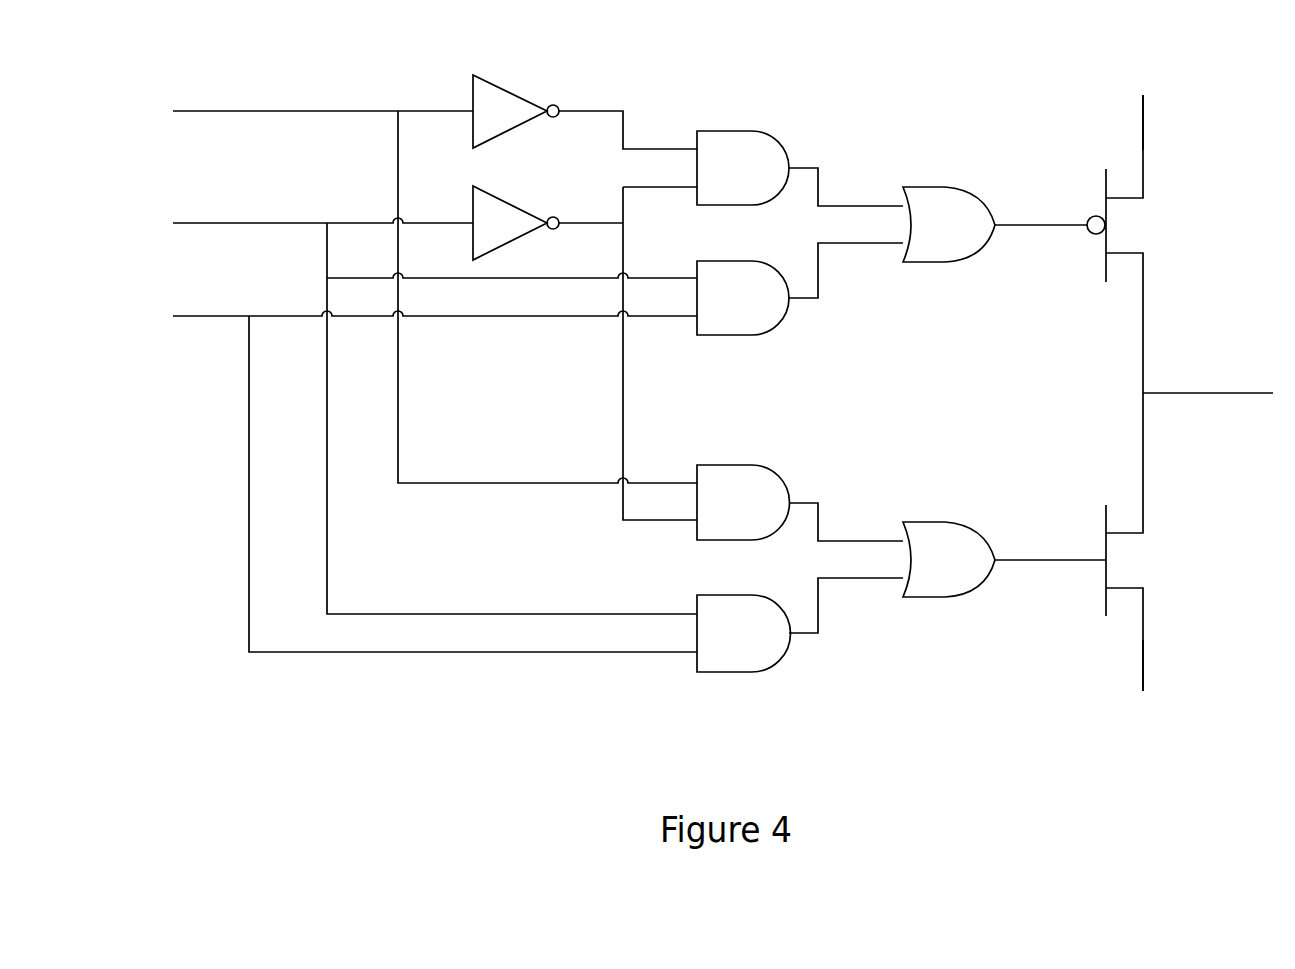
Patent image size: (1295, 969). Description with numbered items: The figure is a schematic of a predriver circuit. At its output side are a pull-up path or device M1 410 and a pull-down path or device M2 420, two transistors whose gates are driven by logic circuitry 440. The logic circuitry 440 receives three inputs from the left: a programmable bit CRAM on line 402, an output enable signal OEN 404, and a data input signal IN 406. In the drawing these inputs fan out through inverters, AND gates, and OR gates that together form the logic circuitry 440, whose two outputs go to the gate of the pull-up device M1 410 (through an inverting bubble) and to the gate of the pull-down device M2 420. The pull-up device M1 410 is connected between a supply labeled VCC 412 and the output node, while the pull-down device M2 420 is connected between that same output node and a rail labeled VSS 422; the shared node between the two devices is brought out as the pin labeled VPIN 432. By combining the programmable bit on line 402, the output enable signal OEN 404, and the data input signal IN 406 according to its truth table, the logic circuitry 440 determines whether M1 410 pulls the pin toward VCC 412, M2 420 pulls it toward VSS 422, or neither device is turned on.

The line 402 is at (418, 261).
The output enable signal OEN 404 is at (422, 388).
The data input signal IN 406 is at (426, 454).
The logic circuitry 440 is at (778, 140).
The pull-up path or device M1 410 is at (1139, 244).
The VCC supply 412 is at (1134, 85).
The VPIN output pin 432 is at (1209, 356).
The pull-down path or device M2 420 is at (1149, 542).
The VSS supply 422 is at (1150, 704).